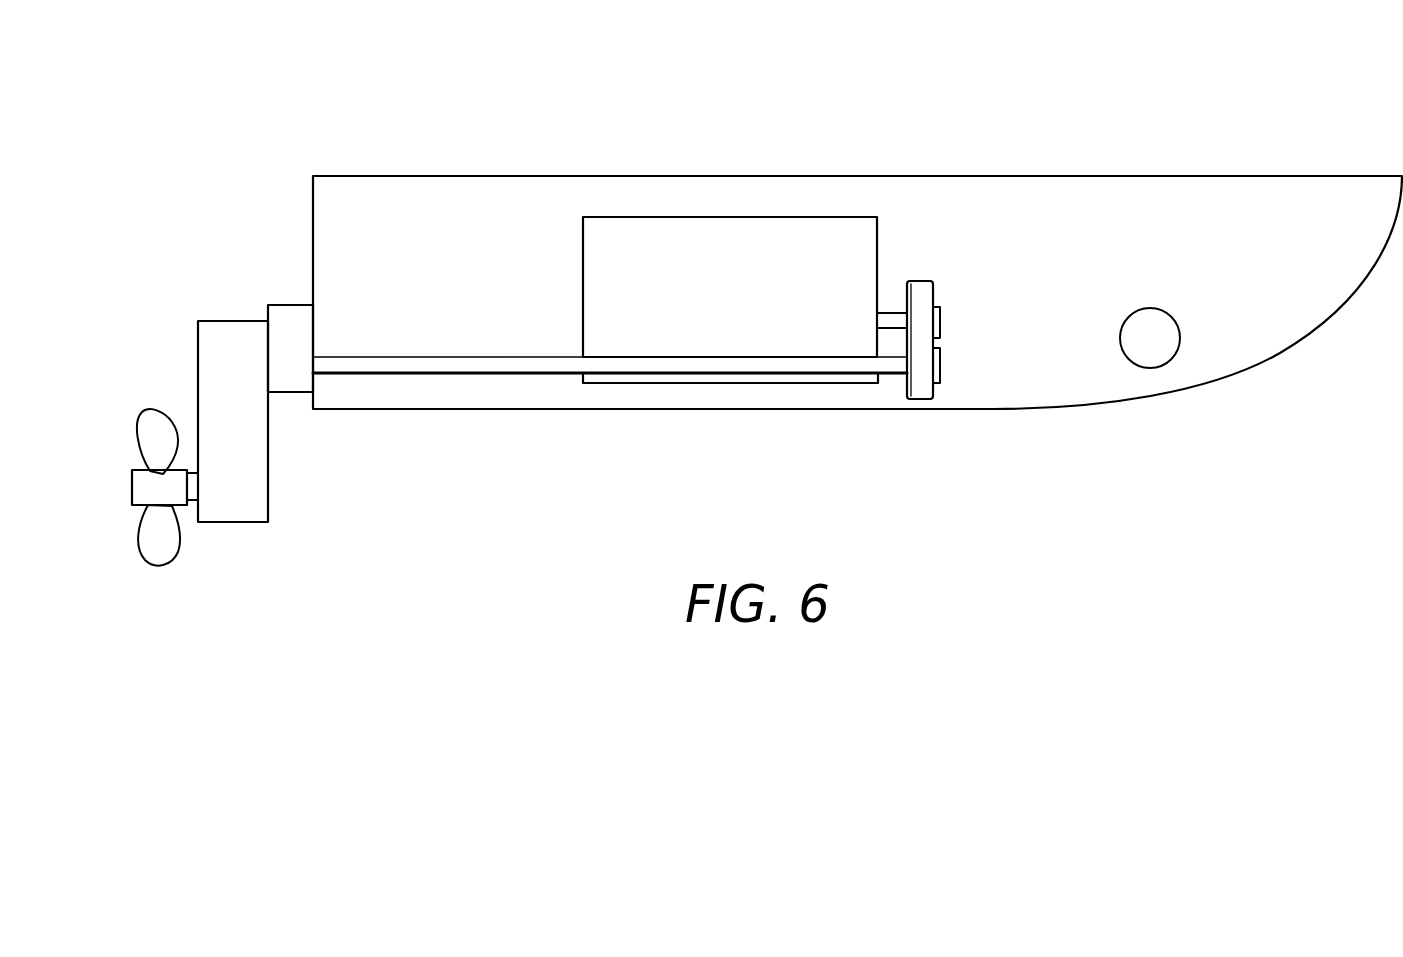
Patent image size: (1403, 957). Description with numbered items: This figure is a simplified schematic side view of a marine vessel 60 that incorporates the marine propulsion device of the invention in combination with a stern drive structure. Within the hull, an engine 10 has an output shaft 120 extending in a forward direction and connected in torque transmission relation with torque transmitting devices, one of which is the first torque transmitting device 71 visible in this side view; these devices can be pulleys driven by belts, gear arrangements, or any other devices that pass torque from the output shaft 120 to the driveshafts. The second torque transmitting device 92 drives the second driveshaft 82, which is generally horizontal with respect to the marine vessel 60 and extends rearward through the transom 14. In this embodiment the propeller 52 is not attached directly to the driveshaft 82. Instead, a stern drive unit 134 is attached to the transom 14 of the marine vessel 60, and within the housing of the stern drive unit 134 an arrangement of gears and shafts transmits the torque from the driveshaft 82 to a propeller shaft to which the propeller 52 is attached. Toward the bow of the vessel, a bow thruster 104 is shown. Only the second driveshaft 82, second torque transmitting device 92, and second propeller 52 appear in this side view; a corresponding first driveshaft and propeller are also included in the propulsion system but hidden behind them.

The marine vessel 60 is at (760, 310).
The transom 14 is at (313, 210).
The engine 10 is at (645, 217).
The second driveshaft 82 is at (506, 356).
The output shaft 120 is at (893, 322).
The first torque transmitting device 71 is at (935, 295).
The second torque transmitting device 92 is at (937, 390).
The bow thruster 104 is at (1165, 334).
The stern drive unit 134 is at (207, 350).
The propeller 52 is at (172, 547).